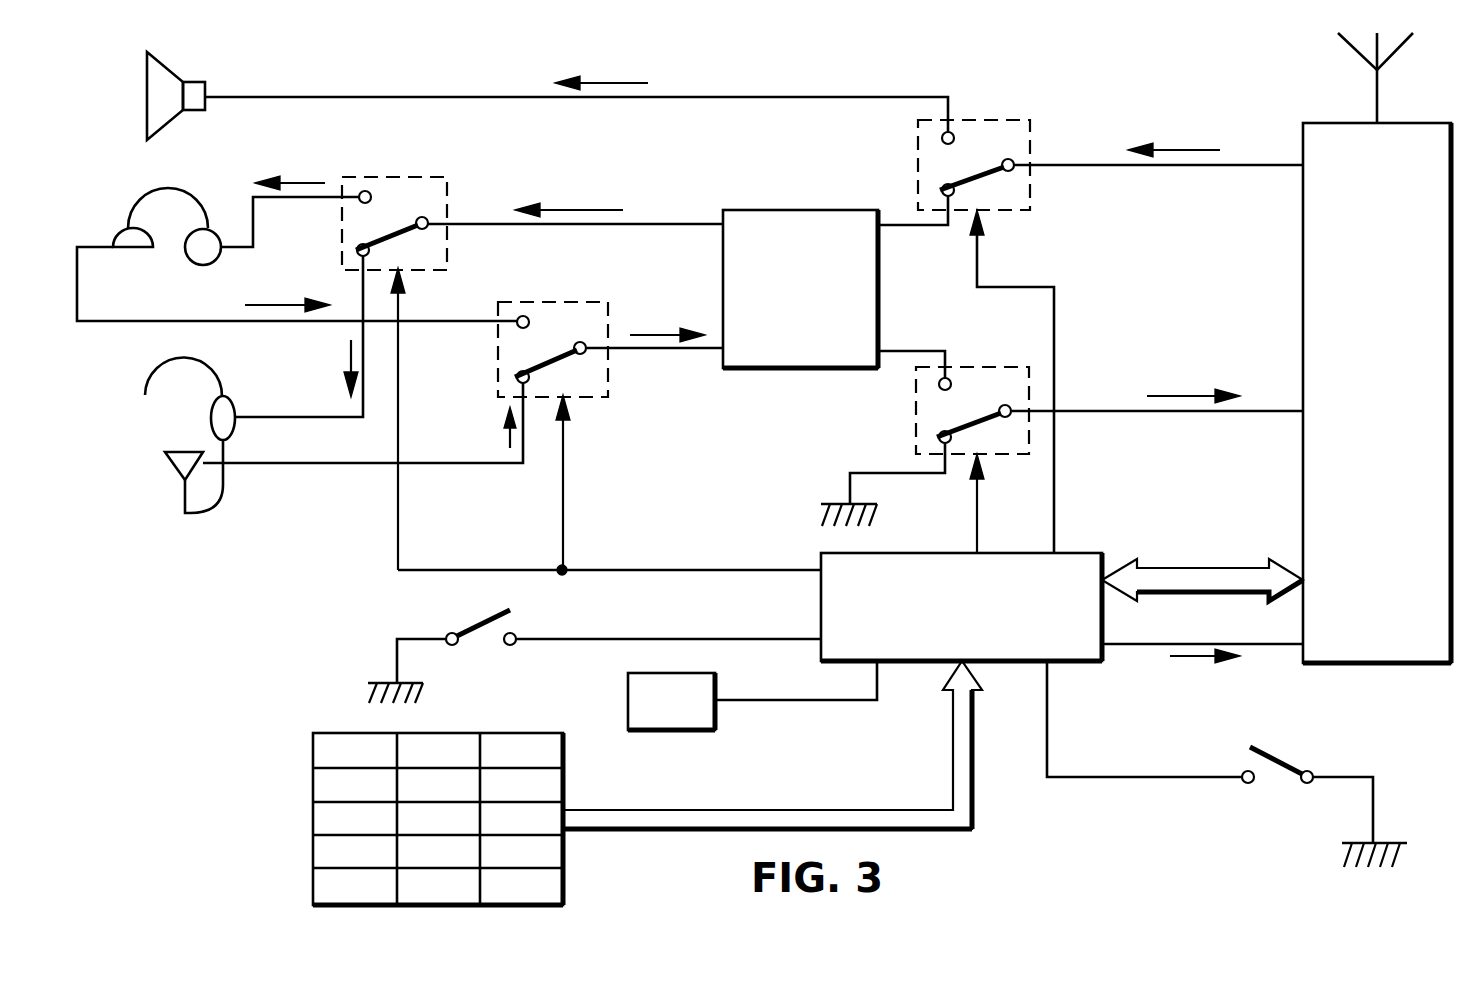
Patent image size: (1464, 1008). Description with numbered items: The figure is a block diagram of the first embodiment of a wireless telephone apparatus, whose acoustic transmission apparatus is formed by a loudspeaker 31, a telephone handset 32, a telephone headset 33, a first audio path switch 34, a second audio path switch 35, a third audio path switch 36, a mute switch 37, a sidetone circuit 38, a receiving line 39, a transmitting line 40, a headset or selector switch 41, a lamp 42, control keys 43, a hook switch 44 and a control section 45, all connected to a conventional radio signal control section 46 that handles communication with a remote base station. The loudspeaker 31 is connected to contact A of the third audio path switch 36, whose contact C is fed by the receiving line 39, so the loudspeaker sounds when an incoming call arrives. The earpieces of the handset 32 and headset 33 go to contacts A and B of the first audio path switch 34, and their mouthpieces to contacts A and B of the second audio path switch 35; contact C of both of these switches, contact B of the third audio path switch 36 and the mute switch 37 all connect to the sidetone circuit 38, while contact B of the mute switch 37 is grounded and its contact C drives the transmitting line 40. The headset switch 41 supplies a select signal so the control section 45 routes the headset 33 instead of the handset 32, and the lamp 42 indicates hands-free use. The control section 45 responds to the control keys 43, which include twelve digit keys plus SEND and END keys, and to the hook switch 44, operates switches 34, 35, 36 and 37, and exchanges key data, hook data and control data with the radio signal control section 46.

The loudspeaker 31 is at (160, 91).
The telephone handset 32 is at (143, 198).
The telephone headset 33 is at (222, 378).
The first audio path switch 34 is at (410, 180).
The second audio path switch 35 is at (608, 387).
The third audio path switch 36 is at (990, 130).
The mute switch 37 is at (928, 408).
The sidetone circuit 38 is at (805, 215).
The receiving line 39 is at (1208, 165).
The transmitting line 40 is at (1180, 411).
The headset or selector switch 41 is at (480, 615).
The lamp 42 is at (668, 722).
The control keys 43 is at (318, 757).
The hook switch 44 is at (1278, 755).
The control section 45 is at (1070, 662).
The radio signal control section 46 is at (1325, 297).